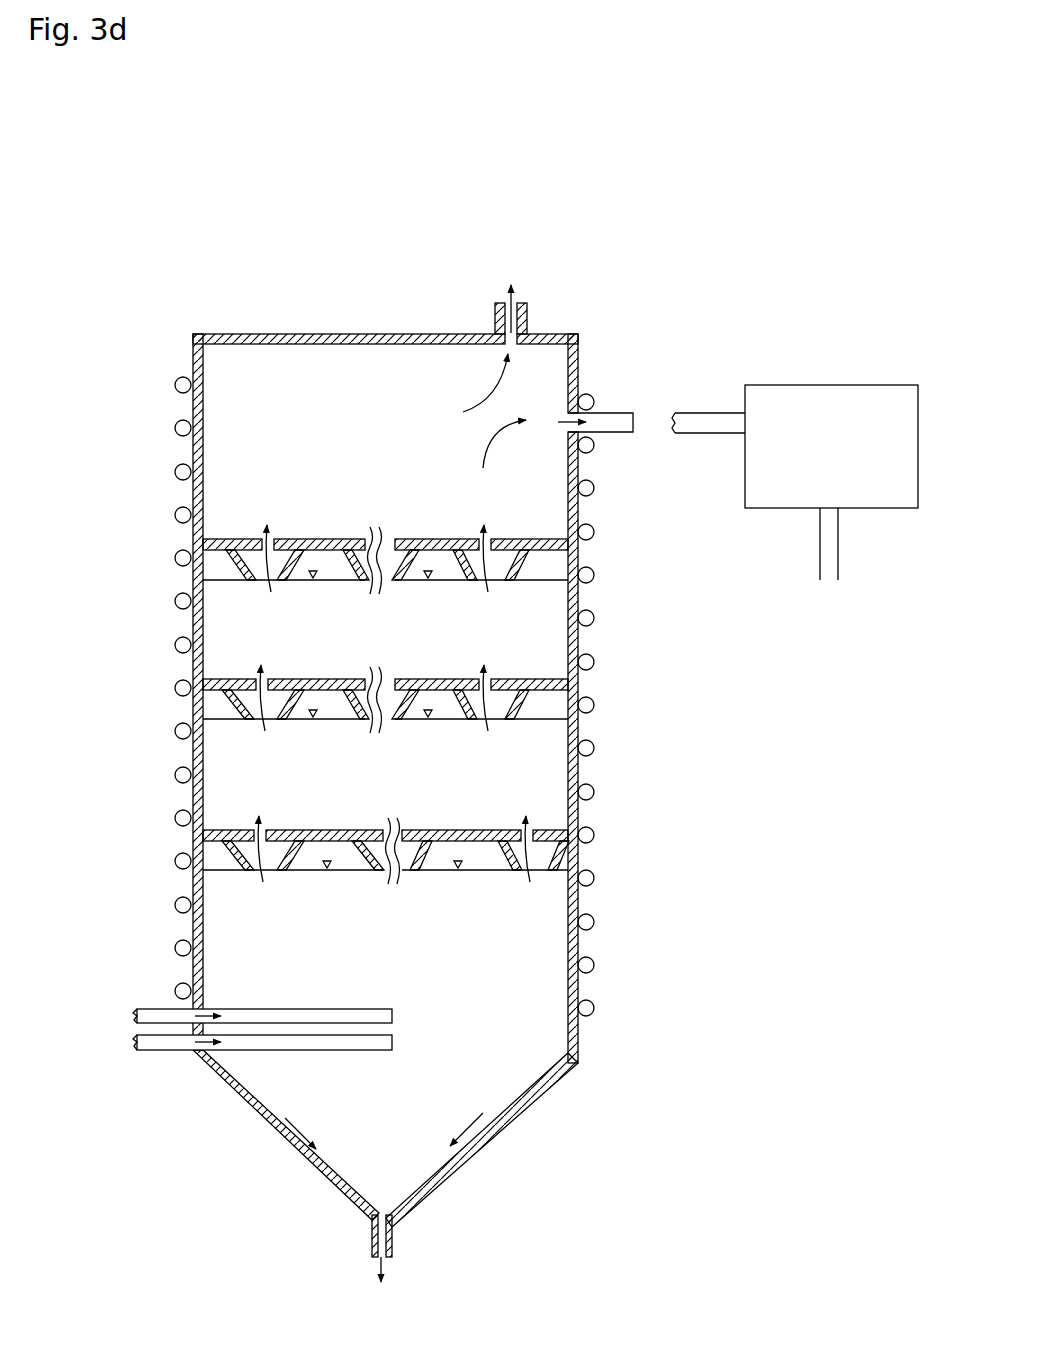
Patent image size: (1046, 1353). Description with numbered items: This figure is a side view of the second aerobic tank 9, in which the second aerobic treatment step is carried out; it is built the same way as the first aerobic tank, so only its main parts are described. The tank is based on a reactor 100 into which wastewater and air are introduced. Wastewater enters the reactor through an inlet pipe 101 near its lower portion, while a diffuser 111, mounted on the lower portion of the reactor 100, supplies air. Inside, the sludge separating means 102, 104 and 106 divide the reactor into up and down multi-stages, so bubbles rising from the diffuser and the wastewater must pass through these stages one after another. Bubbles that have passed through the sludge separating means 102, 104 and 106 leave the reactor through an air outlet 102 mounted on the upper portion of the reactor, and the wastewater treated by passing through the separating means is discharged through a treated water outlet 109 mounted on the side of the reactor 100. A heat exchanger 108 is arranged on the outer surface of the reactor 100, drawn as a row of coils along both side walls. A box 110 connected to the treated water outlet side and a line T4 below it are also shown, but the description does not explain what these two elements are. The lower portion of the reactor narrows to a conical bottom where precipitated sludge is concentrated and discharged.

The second aerobic tank 9 is at (591, 321).
The reactor 100 is at (586, 516).
The sludge separating means / air outlet 102 is at (532, 300).
The sludge separating means 104 is at (226, 711).
The sludge separating means 106 is at (241, 517).
The heat exchanger 108 is at (174, 389).
The treated water outlet 109 is at (630, 408).
The control unit 110 is at (818, 395).
The temperature sensor line T4 is at (828, 580).
The inlet pipe 101 is at (143, 1050).
The diffuser 111 is at (170, 1049).